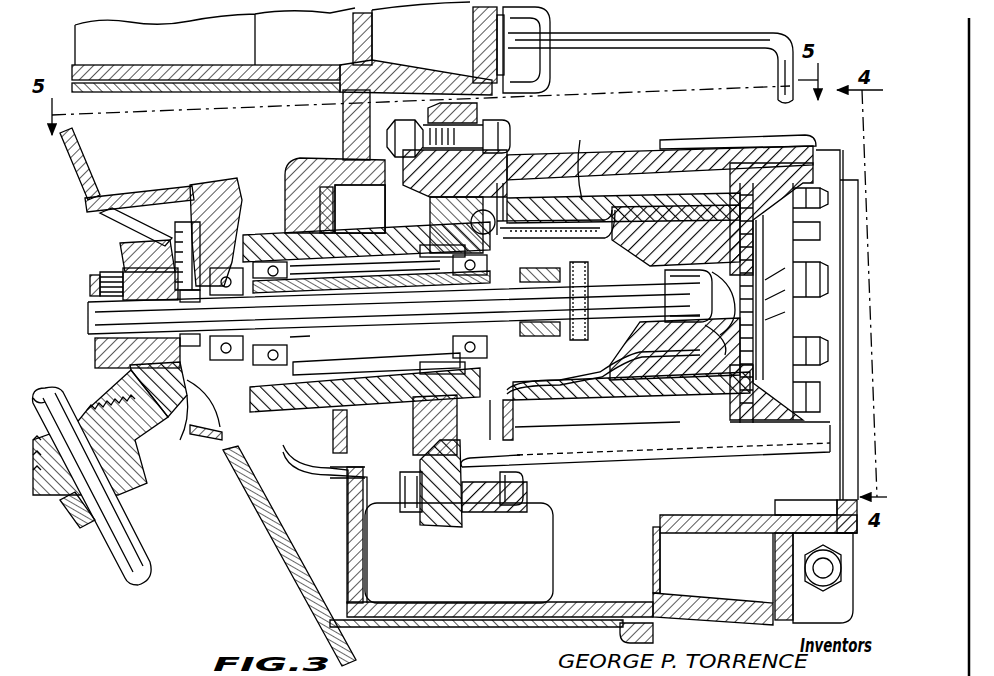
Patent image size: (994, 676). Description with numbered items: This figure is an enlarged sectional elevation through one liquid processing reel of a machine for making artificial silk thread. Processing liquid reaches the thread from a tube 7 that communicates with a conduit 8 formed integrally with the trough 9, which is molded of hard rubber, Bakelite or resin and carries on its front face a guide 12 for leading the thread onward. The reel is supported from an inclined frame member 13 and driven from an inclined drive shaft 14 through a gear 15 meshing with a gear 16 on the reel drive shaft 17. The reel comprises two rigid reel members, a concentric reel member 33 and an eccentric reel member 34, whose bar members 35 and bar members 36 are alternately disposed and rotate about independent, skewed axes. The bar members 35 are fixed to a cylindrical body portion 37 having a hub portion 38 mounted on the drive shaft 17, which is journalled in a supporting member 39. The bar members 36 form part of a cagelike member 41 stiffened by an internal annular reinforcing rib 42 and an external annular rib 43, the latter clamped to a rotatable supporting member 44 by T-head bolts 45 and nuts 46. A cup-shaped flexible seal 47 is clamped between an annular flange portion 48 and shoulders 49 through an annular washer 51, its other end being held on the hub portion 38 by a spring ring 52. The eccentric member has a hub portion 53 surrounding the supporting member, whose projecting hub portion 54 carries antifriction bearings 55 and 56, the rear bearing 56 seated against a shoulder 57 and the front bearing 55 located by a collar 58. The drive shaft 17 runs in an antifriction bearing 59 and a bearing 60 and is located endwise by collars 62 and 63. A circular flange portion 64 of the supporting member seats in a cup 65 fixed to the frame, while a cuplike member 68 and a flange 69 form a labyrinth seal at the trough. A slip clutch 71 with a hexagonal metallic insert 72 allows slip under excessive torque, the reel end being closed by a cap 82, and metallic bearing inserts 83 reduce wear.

The tube 7 is at (605, 38).
The conduit 8 is at (705, 575).
The trough 9 is at (585, 603).
The guide 12 is at (835, 568).
The inclined frame member 13 is at (280, 555).
The drive shaft 14 is at (135, 565).
The gear 15 is at (40, 478).
The gear 16 is at (95, 358).
The reel drive shaft 17 is at (100, 317).
The concentric reel member 33 is at (610, 198).
The eccentric reel member 34 is at (693, 158).
The bar members 35 is at (655, 158).
The bar members 36 is at (738, 144).
The body portion 37 is at (584, 159).
The hub portion 38 is at (670, 248).
The supporting member 39 is at (183, 420).
The cagelike member 41 is at (625, 458).
The internal annular reinforcing rib 42 is at (790, 250).
The external annular rib 43 is at (470, 518).
The rotatable supporting member 44 is at (262, 232).
The T-head bolts 45 is at (510, 124).
The nuts 46 is at (390, 125).
The flexible seal 47 is at (528, 381).
The annular flange portion 48 is at (492, 420).
The shoulders 49 is at (512, 443).
The annular washer 51 is at (513, 410).
The spring ring 52 is at (590, 250).
The hub portion 53 is at (348, 232).
The projecting hub portion 54 is at (347, 337).
The front antifriction bearing 55 is at (440, 290).
The rear antifriction bearing 56 is at (300, 265).
The shoulder 57 is at (300, 337).
The collar 58 is at (490, 400).
The antifriction bearing 59 is at (228, 300).
The bearing 60 is at (463, 309).
The collar 62 is at (565, 295).
The collar 63 is at (193, 302).
The circular flange portion 64 is at (190, 222).
The cup 65 is at (236, 192).
The cuplike member 68 is at (318, 170).
The flange 69 is at (347, 438).
The slip clutch 71 is at (665, 290).
The metallic insert 72 is at (668, 312).
The cap 82 is at (720, 316).
The metallic bearing inserts 83 is at (678, 296).